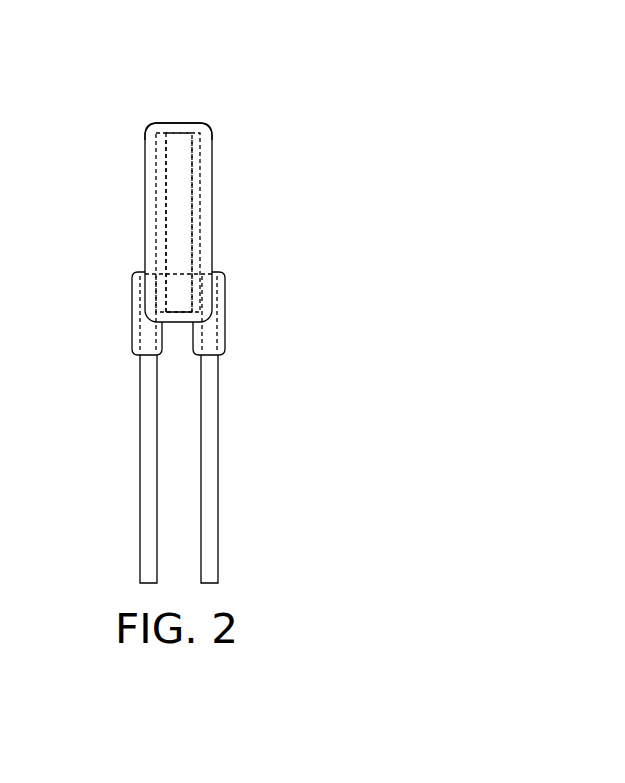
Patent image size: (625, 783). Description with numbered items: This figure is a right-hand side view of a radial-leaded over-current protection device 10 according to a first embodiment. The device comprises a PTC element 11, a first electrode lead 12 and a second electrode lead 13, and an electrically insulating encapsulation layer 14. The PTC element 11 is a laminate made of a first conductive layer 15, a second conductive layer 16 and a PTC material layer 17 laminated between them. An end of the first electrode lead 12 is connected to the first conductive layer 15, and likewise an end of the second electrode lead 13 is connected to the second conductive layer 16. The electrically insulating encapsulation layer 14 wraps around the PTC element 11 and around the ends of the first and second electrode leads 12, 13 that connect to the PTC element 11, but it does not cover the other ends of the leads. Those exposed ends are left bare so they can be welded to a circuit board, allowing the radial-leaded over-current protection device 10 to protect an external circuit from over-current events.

The radial-leaded over-current protection device 10 is at (217, 95).
The PTC element 11 is at (180, 148).
The first electrode lead 12 is at (218, 472).
The second electrode lead 13 is at (139, 472).
The electrically insulating encapsulation layer 14 is at (180, 122).
The first conductive layer 15 is at (197, 190).
The second conductive layer 16 is at (160, 191).
The PTC material layer 17 is at (177, 223).